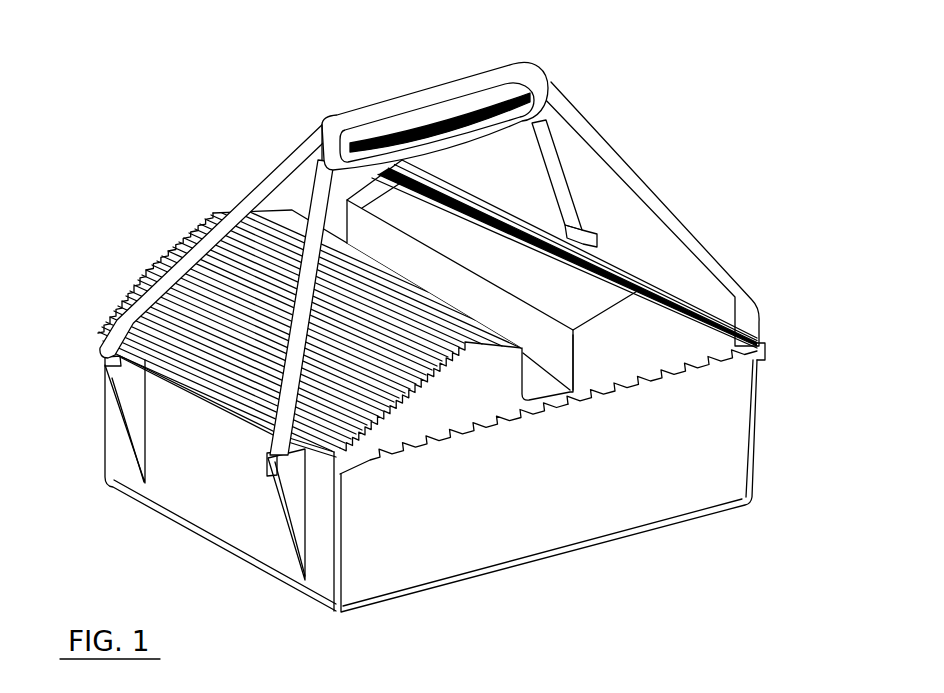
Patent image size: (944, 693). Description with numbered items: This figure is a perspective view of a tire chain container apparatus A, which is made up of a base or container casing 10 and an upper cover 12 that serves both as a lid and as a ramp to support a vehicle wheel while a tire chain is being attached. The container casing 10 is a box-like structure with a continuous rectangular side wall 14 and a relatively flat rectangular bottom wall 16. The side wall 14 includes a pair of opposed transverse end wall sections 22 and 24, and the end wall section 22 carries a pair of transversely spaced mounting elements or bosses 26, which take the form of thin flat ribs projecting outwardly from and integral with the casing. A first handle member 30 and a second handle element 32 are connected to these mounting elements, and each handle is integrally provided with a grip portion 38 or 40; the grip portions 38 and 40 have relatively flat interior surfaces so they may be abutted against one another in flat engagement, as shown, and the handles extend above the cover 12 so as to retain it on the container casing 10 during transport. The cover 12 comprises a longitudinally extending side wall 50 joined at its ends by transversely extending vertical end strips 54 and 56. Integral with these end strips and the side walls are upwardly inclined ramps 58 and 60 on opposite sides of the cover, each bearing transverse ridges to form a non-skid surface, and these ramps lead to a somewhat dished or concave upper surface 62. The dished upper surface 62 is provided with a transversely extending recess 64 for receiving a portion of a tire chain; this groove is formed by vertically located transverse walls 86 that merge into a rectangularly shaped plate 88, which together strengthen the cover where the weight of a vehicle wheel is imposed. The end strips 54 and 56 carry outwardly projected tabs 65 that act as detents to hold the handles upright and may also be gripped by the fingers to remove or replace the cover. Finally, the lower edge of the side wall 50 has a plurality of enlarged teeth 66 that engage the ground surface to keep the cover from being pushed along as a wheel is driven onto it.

The container casing 10 is at (433, 493).
The upper cover 12 is at (465, 279).
The side wall 14 is at (635, 507).
The bottom wall 16 is at (482, 576).
The end wall section 22 is at (208, 509).
The end wall section 24 is at (760, 405).
The mounting element 26 is at (125, 451).
The first handle member 30 is at (604, 150).
The second handle element 32 is at (272, 165).
The grip portion 38 is at (446, 101).
The grip portion 40 is at (337, 112).
The side wall 50 is at (664, 358).
The end strip 54 is at (205, 388).
The end strip 56 is at (768, 349).
The ramp 58 is at (232, 269).
The ramp 60 is at (638, 274).
The dished upper surface 62 is at (552, 280).
The transversely extending recess 64 is at (397, 251).
The tab 65 is at (350, 444).
The teeth 66 is at (515, 423).
The transverse wall 86 is at (527, 370).
The plate 88 is at (574, 376).
The tire chain container apparatus A is at (710, 108).